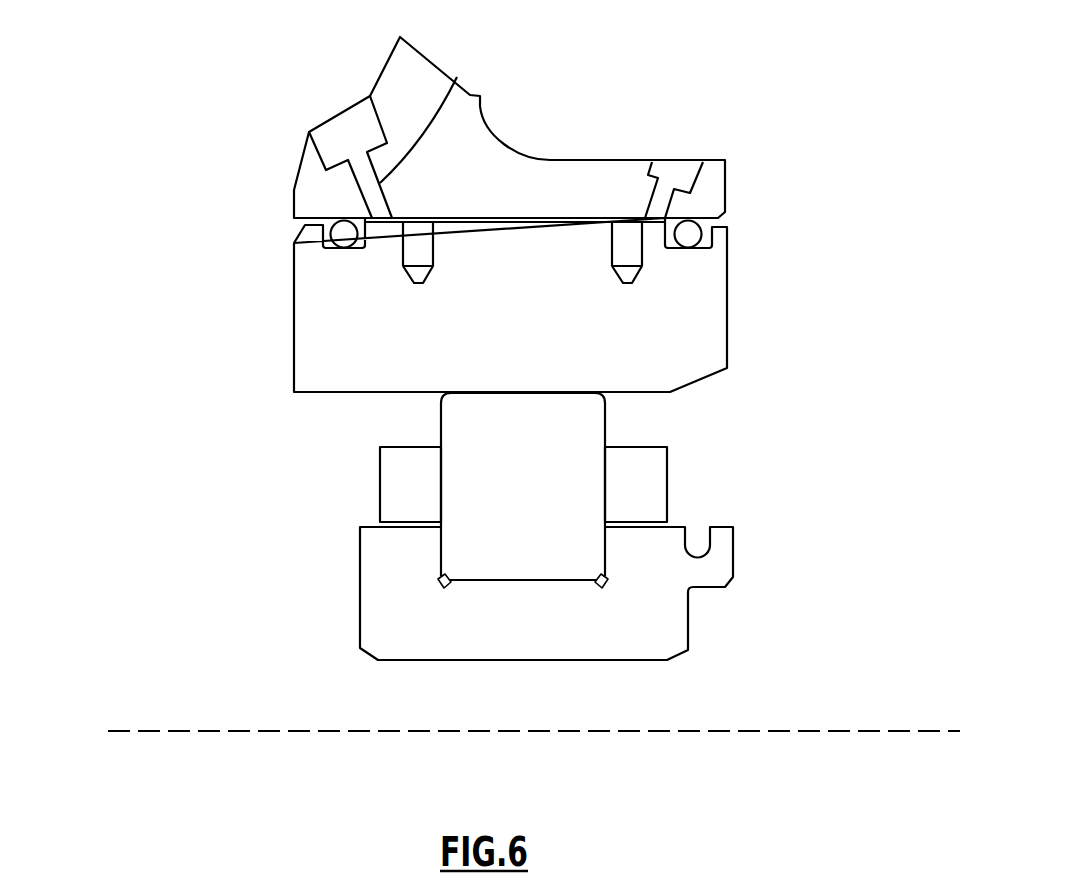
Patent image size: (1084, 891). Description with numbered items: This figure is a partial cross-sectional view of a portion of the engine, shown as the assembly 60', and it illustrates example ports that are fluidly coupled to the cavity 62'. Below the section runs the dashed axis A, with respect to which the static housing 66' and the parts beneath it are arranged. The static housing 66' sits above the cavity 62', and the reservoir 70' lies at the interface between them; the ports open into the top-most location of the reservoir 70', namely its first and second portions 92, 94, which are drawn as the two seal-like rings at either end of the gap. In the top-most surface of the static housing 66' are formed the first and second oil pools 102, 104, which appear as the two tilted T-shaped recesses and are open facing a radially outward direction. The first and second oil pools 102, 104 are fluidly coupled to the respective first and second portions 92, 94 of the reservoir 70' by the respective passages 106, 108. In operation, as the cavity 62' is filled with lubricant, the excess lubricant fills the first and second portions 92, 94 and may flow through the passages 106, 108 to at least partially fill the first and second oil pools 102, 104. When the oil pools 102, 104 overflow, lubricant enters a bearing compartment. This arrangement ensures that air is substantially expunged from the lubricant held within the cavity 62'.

The assembly 60' is at (391, 430).
The cavity 62' is at (510, 305).
The static housing 66' is at (473, 127).
The reservoir 70' is at (467, 276).
The first portion 92 is at (365, 248).
The second portion 94 is at (665, 225).
The first oil pool 102 is at (346, 126).
The second oil pool 104 is at (672, 170).
The passage 106 is at (457, 77).
The passage 108 is at (648, 203).
The axis A is at (230, 733).